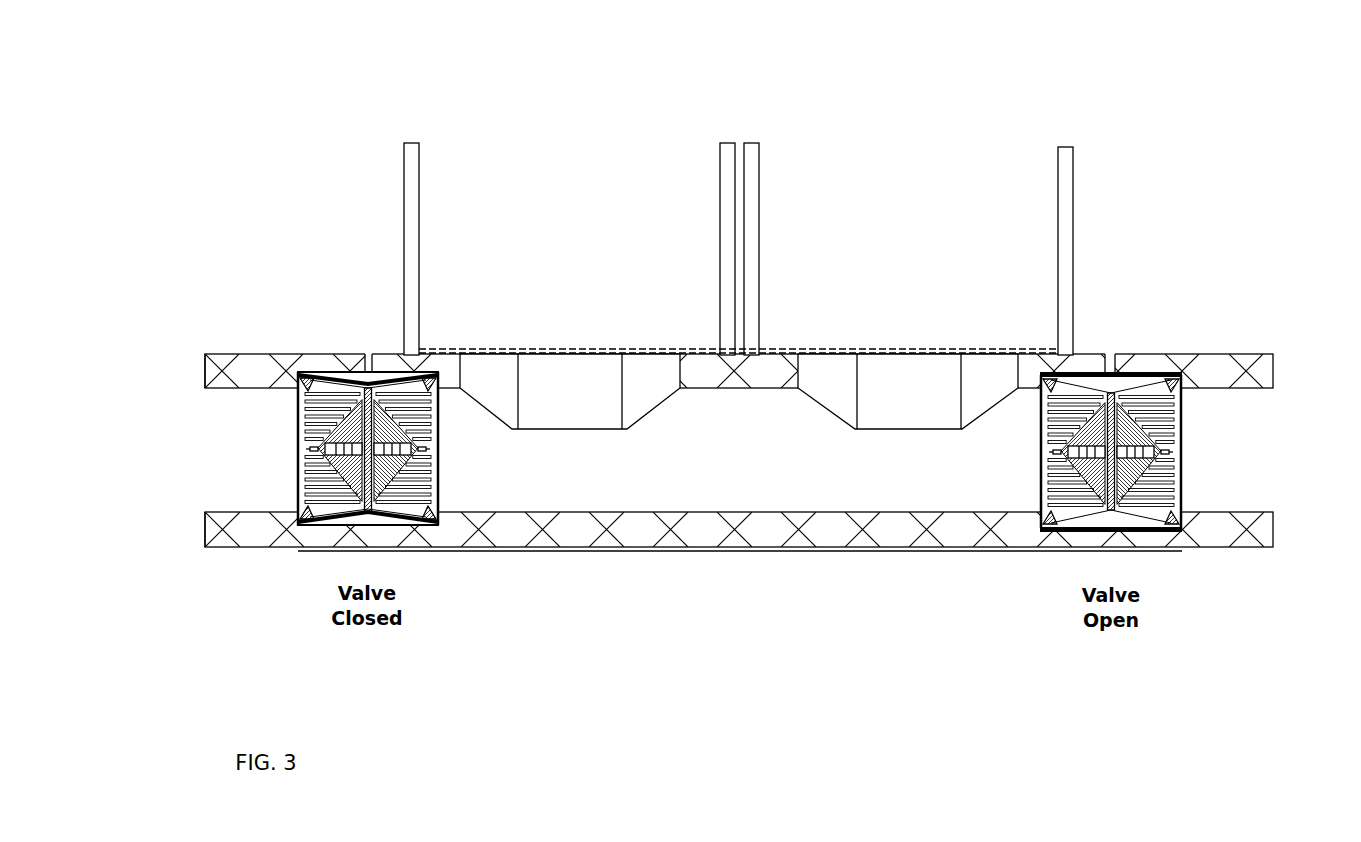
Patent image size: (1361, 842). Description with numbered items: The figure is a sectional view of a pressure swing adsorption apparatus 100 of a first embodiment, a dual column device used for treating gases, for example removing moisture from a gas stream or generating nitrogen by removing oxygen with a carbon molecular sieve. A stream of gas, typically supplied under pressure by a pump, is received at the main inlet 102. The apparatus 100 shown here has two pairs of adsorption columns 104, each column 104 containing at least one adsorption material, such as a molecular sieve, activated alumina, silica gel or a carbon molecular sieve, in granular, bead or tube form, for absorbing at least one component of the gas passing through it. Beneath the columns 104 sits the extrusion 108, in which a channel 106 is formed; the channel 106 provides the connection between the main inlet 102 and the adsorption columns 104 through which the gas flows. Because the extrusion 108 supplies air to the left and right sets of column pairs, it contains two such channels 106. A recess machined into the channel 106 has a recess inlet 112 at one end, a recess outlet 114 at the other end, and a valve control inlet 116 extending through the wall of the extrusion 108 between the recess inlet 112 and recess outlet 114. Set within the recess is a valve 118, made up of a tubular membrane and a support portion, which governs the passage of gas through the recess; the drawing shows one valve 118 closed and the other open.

The pressure swing adsorption apparatus 100 is at (933, 686).
The main inlet 102 is at (223, 447).
The adsorption column 104 is at (513, 190).
The channel 106 is at (690, 492).
The extrusion 108 is at (790, 533).
The recess inlet 112 is at (297, 450).
The recess outlet 114 is at (440, 455).
The valve control inlet 116 is at (365, 357).
The valve 118 is at (233, 424).